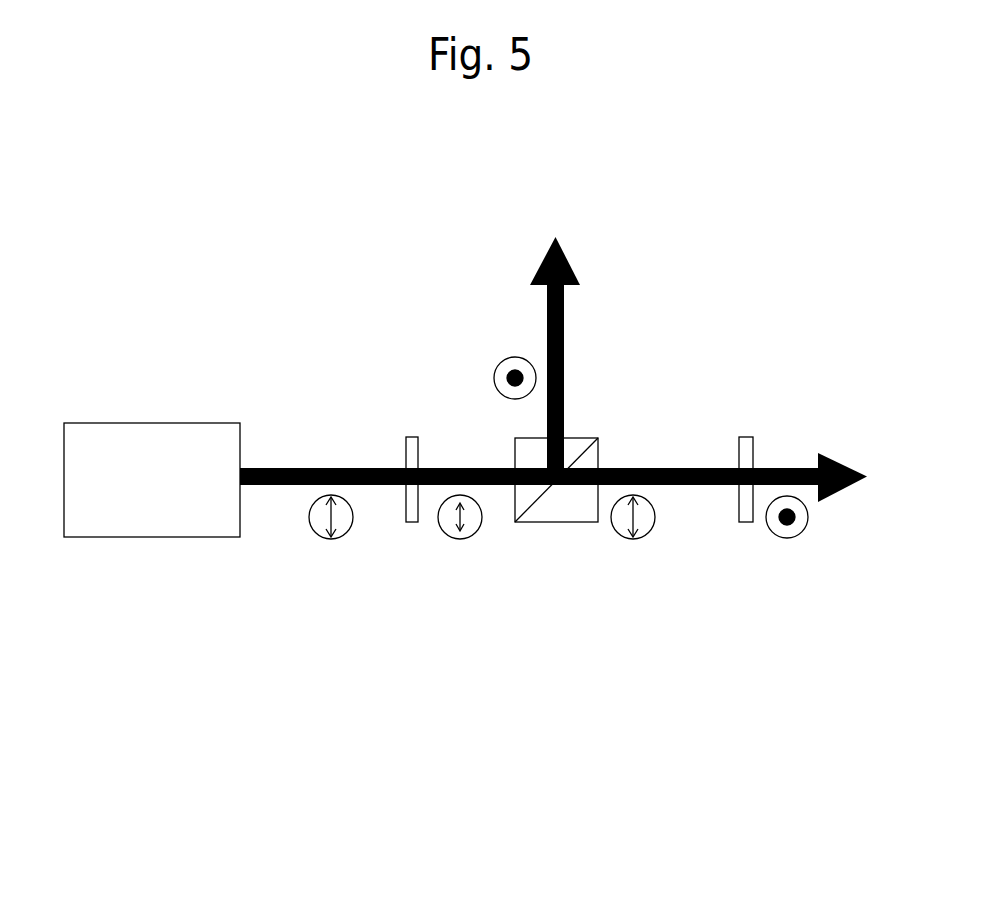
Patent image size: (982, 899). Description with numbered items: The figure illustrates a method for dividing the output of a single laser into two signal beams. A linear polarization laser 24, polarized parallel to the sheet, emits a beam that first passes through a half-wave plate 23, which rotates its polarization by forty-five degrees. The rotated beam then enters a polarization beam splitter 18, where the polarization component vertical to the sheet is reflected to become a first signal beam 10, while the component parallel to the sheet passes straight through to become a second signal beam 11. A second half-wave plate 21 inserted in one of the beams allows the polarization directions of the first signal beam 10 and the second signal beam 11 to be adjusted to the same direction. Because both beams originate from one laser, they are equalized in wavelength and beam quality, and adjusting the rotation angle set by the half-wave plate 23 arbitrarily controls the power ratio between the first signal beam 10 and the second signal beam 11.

The first signal beam 10 is at (547, 325).
The second signal beam 11 is at (713, 485).
The polarization beam splitter 18 is at (555, 522).
The half-wave plate 21 is at (746, 522).
The half-wave plate 23 is at (410, 522).
The linear polarization laser 24 is at (157, 537).